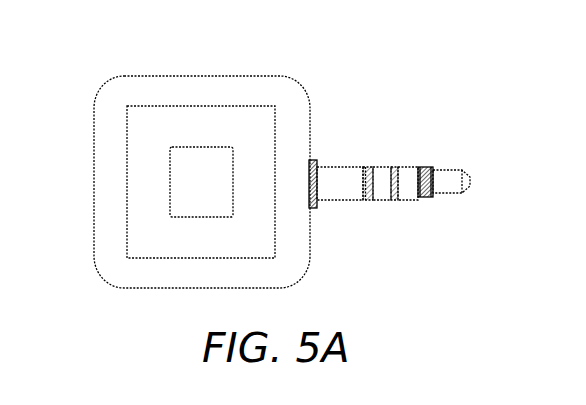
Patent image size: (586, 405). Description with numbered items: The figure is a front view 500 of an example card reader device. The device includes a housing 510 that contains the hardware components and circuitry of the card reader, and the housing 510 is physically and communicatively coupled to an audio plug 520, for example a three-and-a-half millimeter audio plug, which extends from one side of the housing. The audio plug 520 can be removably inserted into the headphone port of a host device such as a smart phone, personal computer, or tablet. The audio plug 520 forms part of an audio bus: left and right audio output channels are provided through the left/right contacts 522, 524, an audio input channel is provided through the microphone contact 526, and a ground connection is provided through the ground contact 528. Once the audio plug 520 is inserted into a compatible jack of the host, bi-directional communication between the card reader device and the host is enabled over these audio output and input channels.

The front view 500 is at (96, 54).
The housing 510 is at (113, 288).
The audio plug 520 is at (480, 122).
The left/right contact 522 is at (453, 183).
The left/right contact 524 is at (408, 177).
The microphone contact 526 is at (338, 185).
The ground contact 528 is at (382, 195).